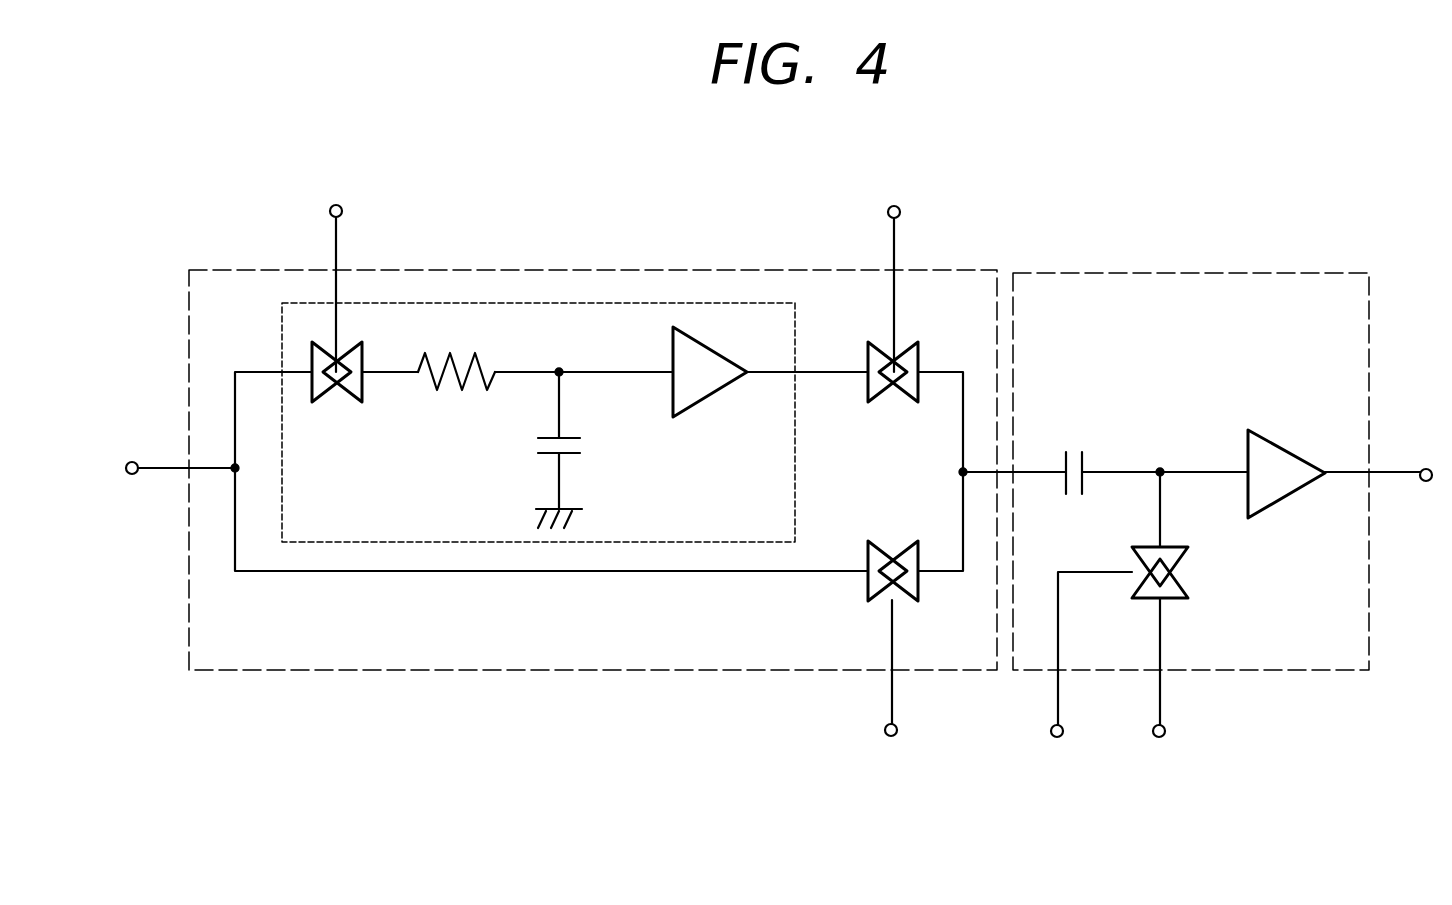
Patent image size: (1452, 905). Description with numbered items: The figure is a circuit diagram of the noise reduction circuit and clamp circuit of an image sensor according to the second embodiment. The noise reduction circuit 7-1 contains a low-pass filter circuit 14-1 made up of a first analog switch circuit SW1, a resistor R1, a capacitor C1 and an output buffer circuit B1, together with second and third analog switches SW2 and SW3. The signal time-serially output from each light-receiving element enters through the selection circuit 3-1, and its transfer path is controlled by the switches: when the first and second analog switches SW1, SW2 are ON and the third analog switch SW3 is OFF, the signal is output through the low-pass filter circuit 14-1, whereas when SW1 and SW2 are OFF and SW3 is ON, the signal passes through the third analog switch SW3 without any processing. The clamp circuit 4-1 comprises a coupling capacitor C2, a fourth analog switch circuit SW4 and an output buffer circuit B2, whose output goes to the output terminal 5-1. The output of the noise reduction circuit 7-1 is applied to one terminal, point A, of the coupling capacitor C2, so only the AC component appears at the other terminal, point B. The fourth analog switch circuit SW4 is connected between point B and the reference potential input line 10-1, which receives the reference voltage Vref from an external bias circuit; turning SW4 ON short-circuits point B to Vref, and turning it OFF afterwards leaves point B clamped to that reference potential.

The selection circuit 3-1 is at (133, 460).
The output terminal 5-1 is at (1429, 468).
The noise reduction circuit 7-1 is at (758, 270).
The low-pass filter circuit 14-1 is at (798, 331).
The clamp circuit 4-1 is at (1298, 272).
The reference potential input line 10-1 is at (1158, 738).
The first analog switch circuit SW1 is at (343, 398).
The second analog switch SW2 is at (897, 400).
The third analog switch SW3 is at (884, 544).
The fourth analog switch circuit SW4 is at (1190, 578).
The resistor R1 is at (455, 380).
The capacitor C1 is at (568, 456).
The coupling capacitor C2 is at (1073, 449).
The output buffer circuit B1 is at (710, 372).
The output buffer circuit B2 is at (1286, 474).
The point A is at (1048, 454).
The point B is at (1100, 454).